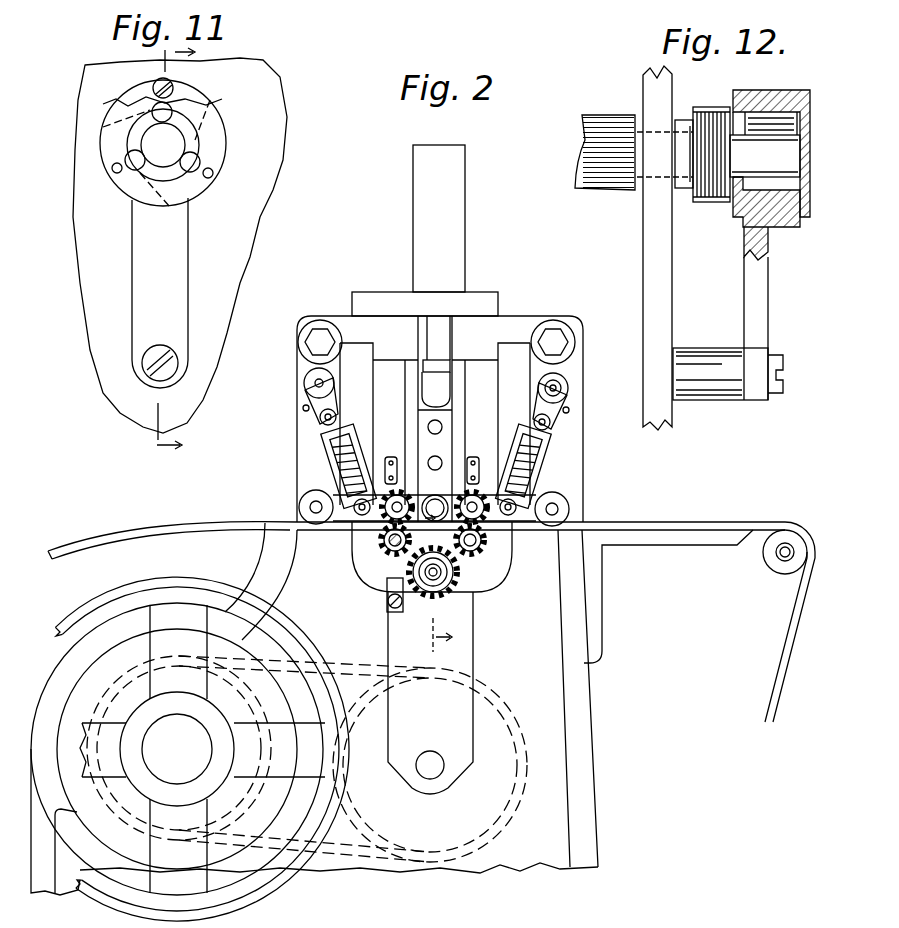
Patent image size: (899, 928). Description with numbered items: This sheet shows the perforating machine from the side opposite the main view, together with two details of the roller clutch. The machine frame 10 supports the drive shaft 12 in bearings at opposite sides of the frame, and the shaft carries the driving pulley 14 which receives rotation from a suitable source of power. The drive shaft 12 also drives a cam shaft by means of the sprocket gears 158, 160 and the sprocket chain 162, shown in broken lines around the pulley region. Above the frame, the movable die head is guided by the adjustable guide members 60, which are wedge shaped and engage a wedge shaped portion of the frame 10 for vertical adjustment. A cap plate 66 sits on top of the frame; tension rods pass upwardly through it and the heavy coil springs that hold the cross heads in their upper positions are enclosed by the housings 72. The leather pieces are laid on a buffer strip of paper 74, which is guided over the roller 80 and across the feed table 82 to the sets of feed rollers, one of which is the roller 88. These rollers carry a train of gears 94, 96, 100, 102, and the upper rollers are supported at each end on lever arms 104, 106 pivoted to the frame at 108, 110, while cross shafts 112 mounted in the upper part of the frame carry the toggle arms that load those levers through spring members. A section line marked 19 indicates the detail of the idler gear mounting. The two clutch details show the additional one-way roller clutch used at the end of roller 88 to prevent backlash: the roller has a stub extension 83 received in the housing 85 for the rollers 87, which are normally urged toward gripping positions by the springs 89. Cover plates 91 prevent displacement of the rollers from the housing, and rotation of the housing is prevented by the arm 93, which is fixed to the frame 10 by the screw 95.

In FIG. 11, the machine frame 10 is at (236, 238).
In FIG. 12, the machine frame 10 is at (652, 242).
In FIG. 2, the machine frame 10 is at (588, 702).
In FIG. 11, the drive shaft 12 is at (156, 250).
In FIG. 2, the drive shaft 12 is at (177, 749).
In FIG. 2, the driving pulley 14 is at (183, 577).
In FIG. 2, the section line 19 is at (426, 583).
In FIG. 2, the adjustable guide members 60 is at (412, 352).
In FIG. 2, the cap plate 66 is at (479, 295).
In FIG. 2, the housings 72 is at (466, 209).
In FIG. 2, the buffer strip of paper 74 is at (790, 629).
In FIG. 2, the roller 80 is at (783, 575).
In FIG. 2, the feed table 82 is at (700, 545).
In FIG. 11, the stub extension 83 is at (163, 145).
In FIG. 12, the stub extension 83 is at (765, 156).
In FIG. 11, the housing 85 is at (218, 163).
In FIG. 12, the housing 85 is at (781, 221).
In FIG. 11, the rollers 87 is at (200, 190).
In FIG. 12, the rollers 87 is at (760, 115).
In FIG. 12, the feed roller 88 is at (586, 191).
In FIG. 11, the springs 89 is at (203, 150).
In FIG. 12, the cover plates 91 is at (803, 193).
In FIG. 11, the arm 93 is at (160, 293).
In FIG. 12, the arm 93 is at (757, 316).
In FIG. 2, the gear 94 is at (386, 520).
In FIG. 11, the screw 95 is at (158, 352).
In FIG. 12, the screw 95 is at (783, 391).
In FIG. 12, the gear 96 is at (712, 106).
In FIG. 2, the gear 96 is at (382, 547).
In FIG. 2, the gear 100 is at (486, 549).
In FIG. 2, the gear 102 is at (503, 532).
In FIG. 2, the lever arm 104 is at (328, 498).
In FIG. 2, the lever arm 106 is at (480, 470).
In FIG. 2, the pivot 108 is at (300, 504).
In FIG. 2, the pivot 110 is at (569, 507).
In FIG. 2, the cross shafts 112 is at (304, 385).
In FIG. 2, the sprocket gear 158 is at (478, 692).
In FIG. 2, the sprocket gear 160 is at (188, 656).
In FIG. 2, the sprocket chain 162 is at (340, 666).